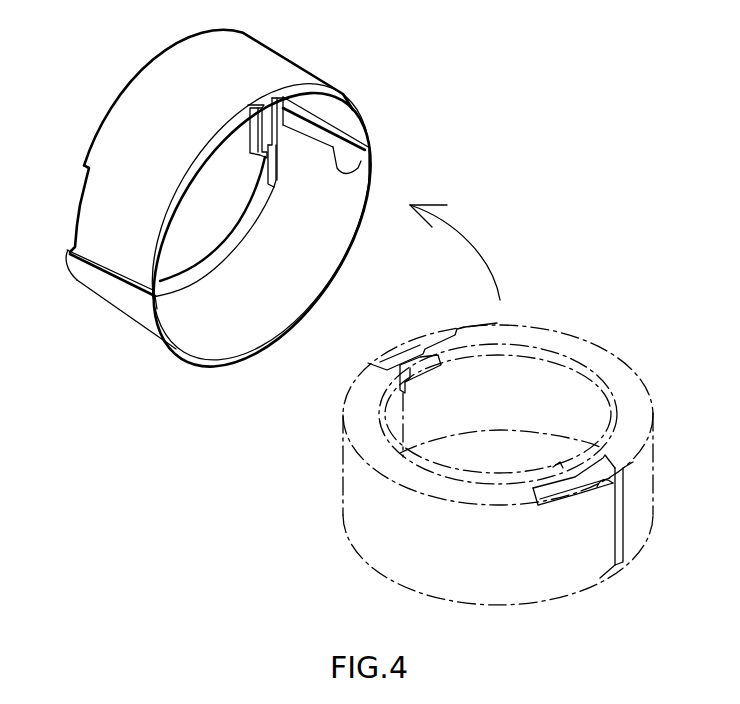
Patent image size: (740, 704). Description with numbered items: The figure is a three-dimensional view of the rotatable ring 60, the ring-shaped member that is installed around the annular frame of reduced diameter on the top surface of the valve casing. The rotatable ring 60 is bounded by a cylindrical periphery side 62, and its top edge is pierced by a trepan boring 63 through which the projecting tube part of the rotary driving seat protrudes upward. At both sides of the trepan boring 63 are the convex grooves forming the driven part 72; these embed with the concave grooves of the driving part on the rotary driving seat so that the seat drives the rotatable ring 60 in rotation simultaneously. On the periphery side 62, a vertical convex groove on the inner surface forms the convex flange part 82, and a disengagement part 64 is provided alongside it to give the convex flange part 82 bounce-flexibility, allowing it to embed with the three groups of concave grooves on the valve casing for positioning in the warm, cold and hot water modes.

The rotatable ring 60 is at (248, 274).
The periphery side 62 is at (263, 68).
The trepan boring 63 is at (298, 235).
The disengagement part 64 is at (371, 153).
The driven part 72 is at (256, 135).
The convex flange part 82 is at (350, 175).